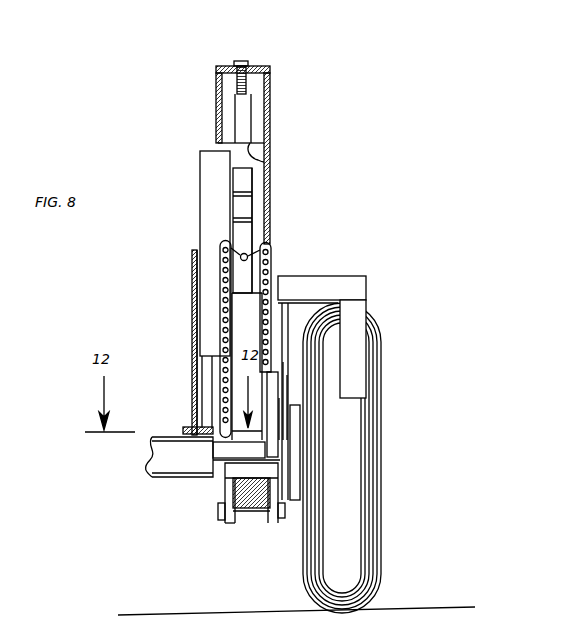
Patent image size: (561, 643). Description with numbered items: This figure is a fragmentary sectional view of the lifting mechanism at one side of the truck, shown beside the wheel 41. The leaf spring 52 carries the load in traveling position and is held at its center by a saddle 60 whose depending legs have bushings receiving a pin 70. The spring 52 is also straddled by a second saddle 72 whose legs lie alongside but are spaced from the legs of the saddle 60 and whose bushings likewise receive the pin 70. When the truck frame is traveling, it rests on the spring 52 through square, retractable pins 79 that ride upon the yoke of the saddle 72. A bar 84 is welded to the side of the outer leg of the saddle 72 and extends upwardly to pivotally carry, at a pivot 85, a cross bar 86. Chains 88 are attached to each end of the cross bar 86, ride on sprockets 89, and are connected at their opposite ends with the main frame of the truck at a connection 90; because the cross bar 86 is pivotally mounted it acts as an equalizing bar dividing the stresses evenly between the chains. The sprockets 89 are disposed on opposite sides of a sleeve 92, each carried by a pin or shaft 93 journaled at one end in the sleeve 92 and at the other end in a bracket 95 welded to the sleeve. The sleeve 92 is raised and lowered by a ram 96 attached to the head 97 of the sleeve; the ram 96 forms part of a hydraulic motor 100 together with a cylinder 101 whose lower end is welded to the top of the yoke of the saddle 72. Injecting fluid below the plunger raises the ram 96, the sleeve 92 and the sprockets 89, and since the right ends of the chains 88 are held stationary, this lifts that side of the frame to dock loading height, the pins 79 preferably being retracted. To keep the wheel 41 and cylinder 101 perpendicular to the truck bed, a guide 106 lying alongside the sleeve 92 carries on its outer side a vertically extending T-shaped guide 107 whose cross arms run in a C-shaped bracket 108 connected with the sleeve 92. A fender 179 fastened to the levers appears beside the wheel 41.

The wheel 41 is at (385, 525).
The leaf spring 52 is at (263, 522).
The saddle 60 is at (242, 525).
The pin 70 is at (218, 510).
The second saddle 72 is at (230, 524).
The pin 79 is at (207, 478).
The bar 84 is at (279, 400).
The pivot 85 is at (287, 375).
The cross bar 86 is at (283, 362).
The chain 88 is at (273, 262).
The sprocket 89 is at (246, 259).
The chain connection 90 is at (198, 422).
The sleeve 92 is at (270, 123).
The pin or shaft 93 is at (246, 213).
The bracket 95 is at (263, 195).
The ram 96 is at (244, 99).
The head 97 is at (243, 61).
The hydraulic motor 100 is at (262, 140).
The cylinder 101 is at (258, 157).
The guide 106 is at (192, 252).
The guide 107 is at (196, 372).
The bracket 108 is at (205, 151).
The fender 179 is at (350, 278).